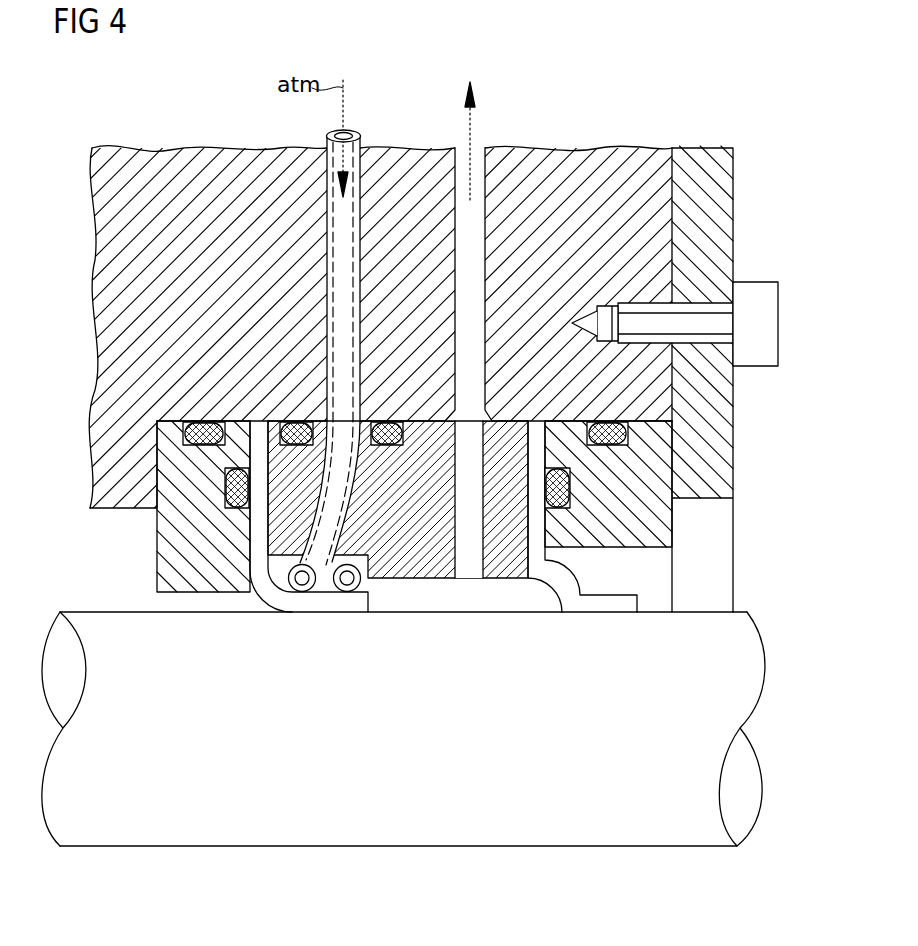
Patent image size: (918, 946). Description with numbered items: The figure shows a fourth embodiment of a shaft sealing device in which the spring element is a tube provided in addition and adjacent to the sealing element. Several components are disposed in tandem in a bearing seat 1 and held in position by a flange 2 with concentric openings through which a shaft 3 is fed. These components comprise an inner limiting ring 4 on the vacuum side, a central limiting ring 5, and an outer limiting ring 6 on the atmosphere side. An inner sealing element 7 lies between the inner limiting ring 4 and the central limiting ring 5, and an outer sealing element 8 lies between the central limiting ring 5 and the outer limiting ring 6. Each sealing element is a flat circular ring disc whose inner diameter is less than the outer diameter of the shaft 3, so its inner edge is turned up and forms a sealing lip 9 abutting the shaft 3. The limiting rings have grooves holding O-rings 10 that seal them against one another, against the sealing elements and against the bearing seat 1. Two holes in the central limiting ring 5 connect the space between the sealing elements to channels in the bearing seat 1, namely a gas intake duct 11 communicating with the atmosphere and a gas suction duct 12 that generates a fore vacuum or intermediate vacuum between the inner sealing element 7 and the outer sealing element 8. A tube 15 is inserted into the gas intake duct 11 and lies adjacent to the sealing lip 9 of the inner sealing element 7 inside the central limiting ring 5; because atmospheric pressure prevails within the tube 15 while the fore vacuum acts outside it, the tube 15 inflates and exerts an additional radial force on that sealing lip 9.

The bearing seat 1 is at (178, 158).
The flange 2 is at (726, 200).
The shaft 3 is at (382, 848).
The inner limiting ring 4 is at (160, 536).
The central limiting ring 5 is at (425, 565).
The outer limiting ring 6 is at (662, 518).
The inner sealing element 7 is at (256, 536).
The outer sealing element 8 is at (538, 556).
The sealing lip 9 is at (338, 605).
The O-rings 10 is at (297, 428).
The gas intake duct 11 is at (326, 183).
The gas suction duct 12 is at (480, 150).
The tube 15 is at (356, 134).